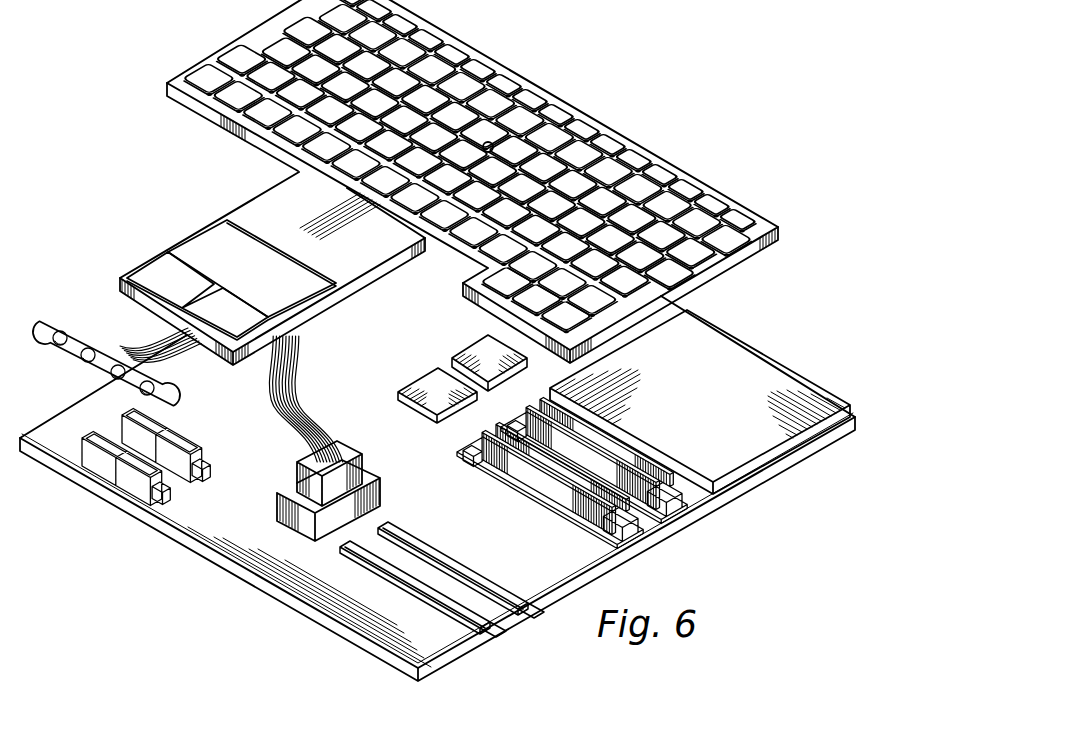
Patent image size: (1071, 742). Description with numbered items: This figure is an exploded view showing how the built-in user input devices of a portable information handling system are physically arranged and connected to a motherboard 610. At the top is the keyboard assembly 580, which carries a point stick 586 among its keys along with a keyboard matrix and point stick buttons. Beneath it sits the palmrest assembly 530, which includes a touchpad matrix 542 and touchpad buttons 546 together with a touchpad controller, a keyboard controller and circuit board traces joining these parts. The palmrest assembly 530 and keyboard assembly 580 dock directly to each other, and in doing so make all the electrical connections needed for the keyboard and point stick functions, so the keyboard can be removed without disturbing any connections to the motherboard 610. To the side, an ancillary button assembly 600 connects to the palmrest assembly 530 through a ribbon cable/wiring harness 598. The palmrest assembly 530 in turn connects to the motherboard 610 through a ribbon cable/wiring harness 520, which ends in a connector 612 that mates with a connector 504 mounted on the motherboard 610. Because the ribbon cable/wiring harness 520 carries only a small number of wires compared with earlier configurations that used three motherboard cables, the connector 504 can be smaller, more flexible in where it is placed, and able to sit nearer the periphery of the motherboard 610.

The keyboard assembly 580 is at (600, 121).
The point stick 586 is at (490, 141).
The palmrest assembly 530 is at (361, 289).
The touchpad matrix 542 is at (208, 242).
The touchpad buttons 546 is at (151, 277).
The ribbon cable/wiring harness 598 is at (146, 340).
The ancillary button assembly 600 is at (67, 357).
The motherboard 610 is at (218, 566).
The ribbon cable/wiring harness 520 is at (279, 419).
The connector 612 is at (362, 460).
The connector 504 is at (379, 494).